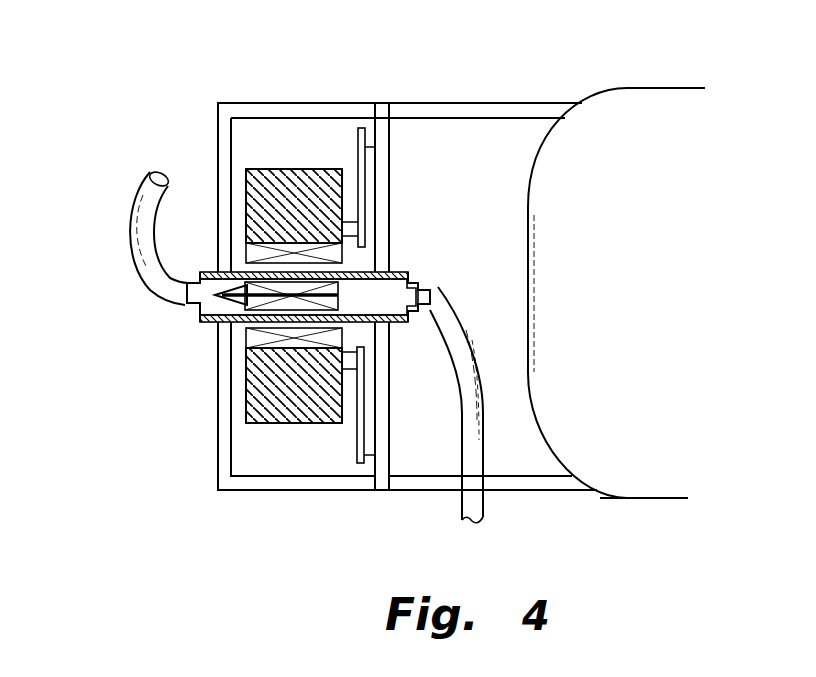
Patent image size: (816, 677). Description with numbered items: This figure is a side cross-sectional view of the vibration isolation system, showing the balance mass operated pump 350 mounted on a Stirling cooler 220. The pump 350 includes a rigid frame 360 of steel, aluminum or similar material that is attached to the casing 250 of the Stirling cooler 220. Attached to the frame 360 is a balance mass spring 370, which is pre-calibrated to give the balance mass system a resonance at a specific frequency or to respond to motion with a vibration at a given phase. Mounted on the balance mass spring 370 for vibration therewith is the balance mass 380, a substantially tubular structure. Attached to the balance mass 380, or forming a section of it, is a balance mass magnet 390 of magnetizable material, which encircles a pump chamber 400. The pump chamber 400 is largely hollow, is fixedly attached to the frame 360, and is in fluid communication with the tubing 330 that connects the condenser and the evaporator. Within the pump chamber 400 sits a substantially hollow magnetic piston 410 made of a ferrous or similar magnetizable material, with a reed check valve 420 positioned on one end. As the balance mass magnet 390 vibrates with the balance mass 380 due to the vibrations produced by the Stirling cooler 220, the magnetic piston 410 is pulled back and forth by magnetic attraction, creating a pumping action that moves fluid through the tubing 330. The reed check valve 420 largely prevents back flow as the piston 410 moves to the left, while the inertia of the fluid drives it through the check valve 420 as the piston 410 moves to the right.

The Stirling cooler 220 is at (625, 503).
The casing 250 is at (612, 105).
The tubing 330 is at (133, 210).
The balance mass operated pump 350 is at (291, 294).
The rigid frame 360 is at (447, 103).
The balance mass spring 370 is at (358, 165).
The balance mass 380 is at (272, 169).
The balance mass magnet 390 is at (347, 257).
The pump chamber 400 is at (338, 306).
The magnetic piston 410 is at (430, 291).
The reed check valve 420 is at (236, 300).